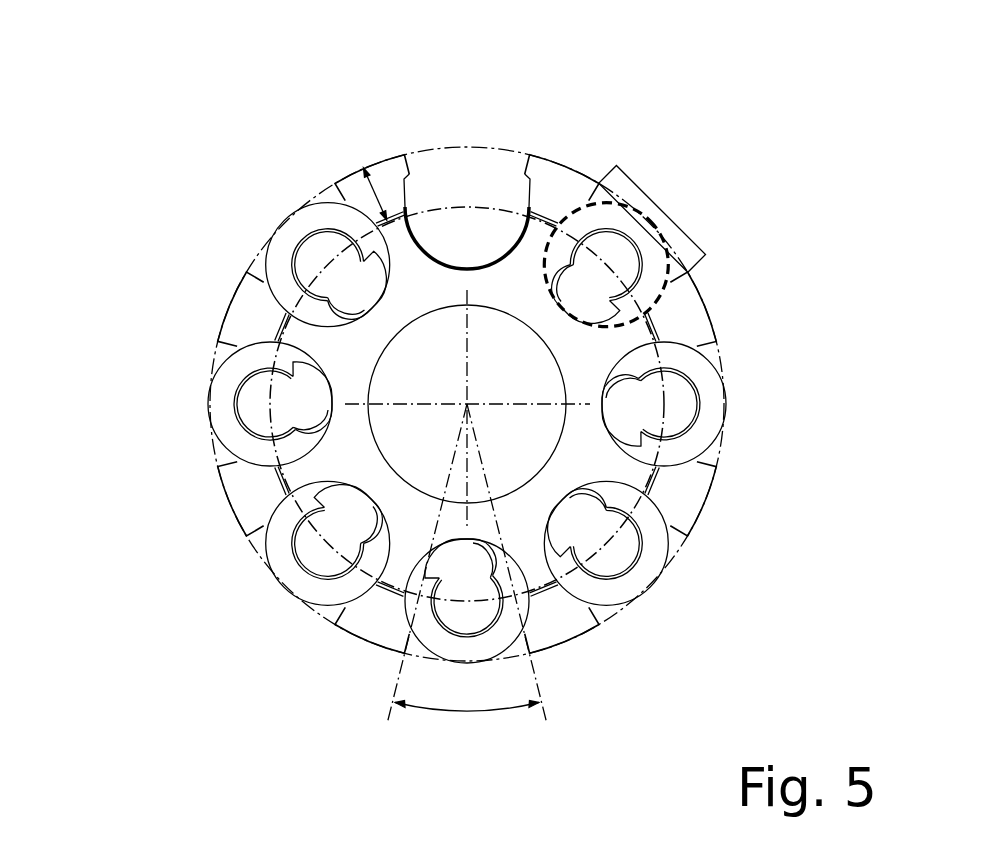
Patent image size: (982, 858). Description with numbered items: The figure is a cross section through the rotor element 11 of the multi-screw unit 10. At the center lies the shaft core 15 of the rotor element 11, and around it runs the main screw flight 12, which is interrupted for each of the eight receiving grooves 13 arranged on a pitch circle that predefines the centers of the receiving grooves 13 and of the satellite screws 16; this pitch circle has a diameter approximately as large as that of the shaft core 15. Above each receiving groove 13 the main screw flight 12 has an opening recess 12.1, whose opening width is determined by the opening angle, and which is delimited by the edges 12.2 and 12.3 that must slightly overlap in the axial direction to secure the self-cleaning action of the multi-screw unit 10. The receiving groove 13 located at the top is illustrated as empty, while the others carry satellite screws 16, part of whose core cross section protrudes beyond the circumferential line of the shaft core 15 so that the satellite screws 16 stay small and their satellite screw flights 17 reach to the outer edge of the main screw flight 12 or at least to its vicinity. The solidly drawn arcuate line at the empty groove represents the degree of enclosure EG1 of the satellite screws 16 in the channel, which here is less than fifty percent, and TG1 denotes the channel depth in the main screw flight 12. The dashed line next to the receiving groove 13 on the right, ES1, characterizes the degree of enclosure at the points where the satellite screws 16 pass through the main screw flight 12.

The multi-screw unit 10 is at (166, 78).
The rotor element 11 is at (467, 404).
The main screw flight 12 is at (558, 177).
The opening recess 12.1 is at (433, 157).
The edge 12.2 is at (268, 530).
The edge 12.3 is at (335, 623).
The receiving groove 13 is at (458, 232).
The shaft core 15 is at (335, 345).
The satellite screw 16 is at (323, 255).
The satellite screw flight 17 is at (293, 235).
The channel depth TG1 is at (372, 188).
The degree of enclosure of the satellite screws in the channel EG1 is at (487, 232).
The degree of enclosure where the satellite screws pass through the main screw fligh ES1 is at (653, 305).